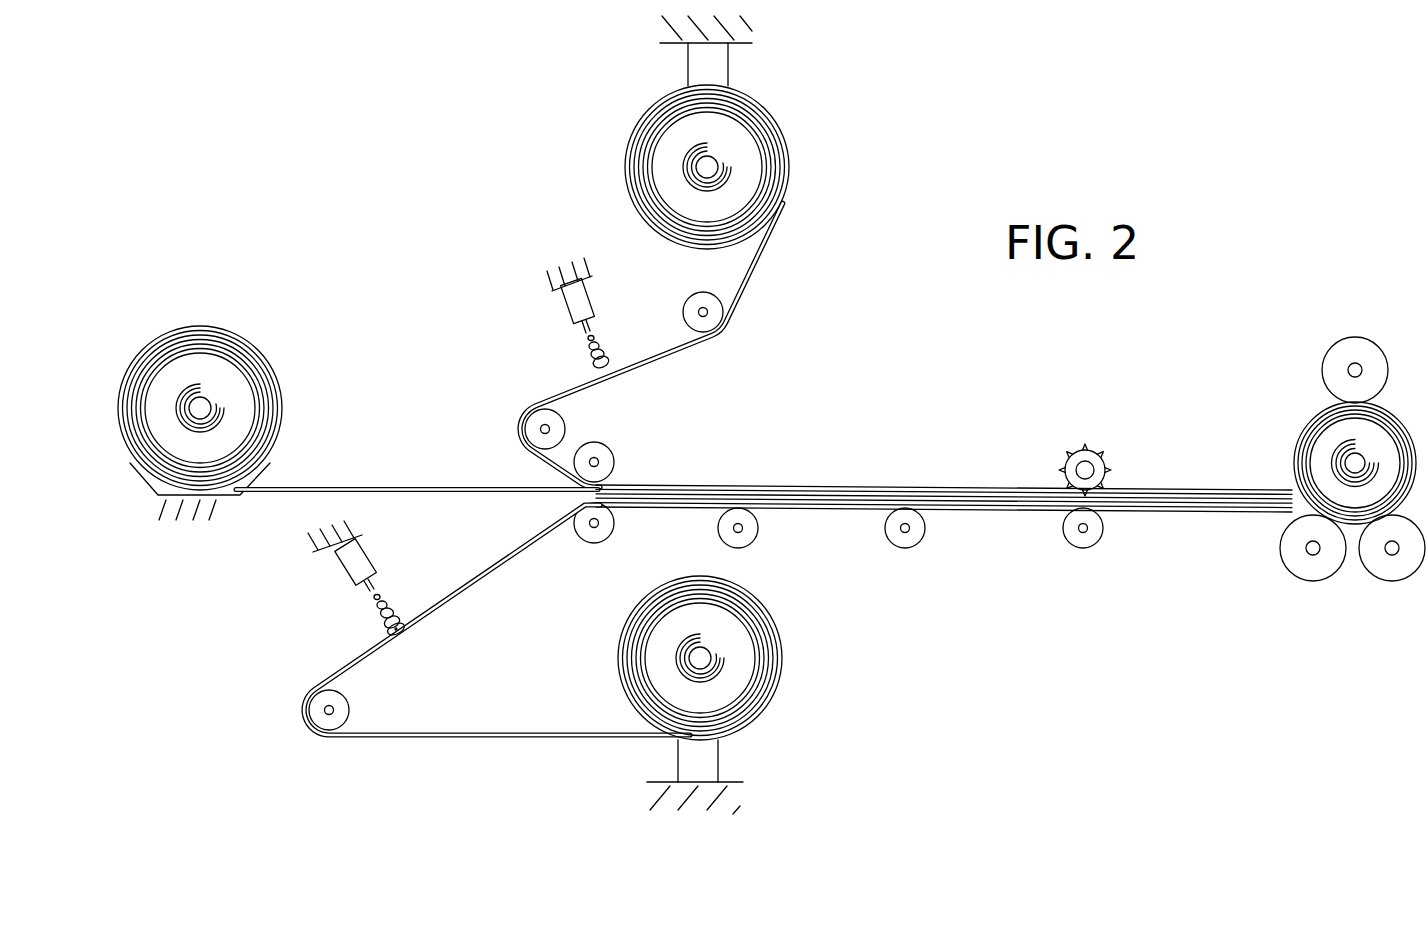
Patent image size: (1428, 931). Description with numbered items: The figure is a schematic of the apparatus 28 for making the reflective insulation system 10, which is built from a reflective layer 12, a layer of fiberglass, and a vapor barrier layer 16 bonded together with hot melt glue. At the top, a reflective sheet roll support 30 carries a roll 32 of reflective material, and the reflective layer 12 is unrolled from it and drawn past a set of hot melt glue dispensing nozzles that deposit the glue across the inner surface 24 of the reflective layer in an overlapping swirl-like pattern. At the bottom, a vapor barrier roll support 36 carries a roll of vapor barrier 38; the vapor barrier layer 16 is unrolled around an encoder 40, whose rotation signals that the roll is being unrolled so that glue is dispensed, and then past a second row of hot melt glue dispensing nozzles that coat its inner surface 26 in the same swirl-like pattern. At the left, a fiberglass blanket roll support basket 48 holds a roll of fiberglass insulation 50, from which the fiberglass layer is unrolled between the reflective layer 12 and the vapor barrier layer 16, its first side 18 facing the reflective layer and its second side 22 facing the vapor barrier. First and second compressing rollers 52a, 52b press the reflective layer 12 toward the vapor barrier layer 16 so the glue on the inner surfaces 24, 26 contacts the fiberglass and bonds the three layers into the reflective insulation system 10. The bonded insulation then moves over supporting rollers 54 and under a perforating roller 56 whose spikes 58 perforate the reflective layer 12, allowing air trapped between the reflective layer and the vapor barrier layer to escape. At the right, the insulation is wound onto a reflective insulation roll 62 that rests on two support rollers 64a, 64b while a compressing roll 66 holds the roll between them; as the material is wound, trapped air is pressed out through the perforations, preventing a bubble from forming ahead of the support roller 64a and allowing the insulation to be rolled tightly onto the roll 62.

The reflective insulation system 10 is at (849, 460).
The reflective layer 12 is at (645, 485).
The vapor barrier layer 16 is at (640, 507).
The first side 18 is at (365, 486).
The second side 22 is at (356, 495).
The inner surface of the reflective layer 24 is at (565, 393).
The inner surface of the vapor barrier layer 26 is at (462, 575).
The apparatus 28 is at (844, 254).
The reflective sheet roll support 30 is at (700, 68).
The roll of reflective material 32 is at (760, 130).
The vapor barrier roll support 36 is at (708, 766).
The roll of vapor barrier 38 is at (748, 660).
The encoder 40 is at (340, 707).
The fiberglass blanket roll support basket 48 is at (143, 478).
The roll of fiberglass insulation 50 is at (270, 380).
The first compressing roller 52a is at (598, 455).
The second compressing roller 52b is at (590, 533).
The supporting rollers 54 is at (744, 526).
The perforating roller 56 is at (1091, 453).
The spikes 58 is at (1078, 452).
The reflective insulation roll 62 is at (1330, 430).
The first support roller 64a is at (1308, 570).
The second support roller 64b is at (1395, 572).
The compressing roll 66 is at (1335, 362).